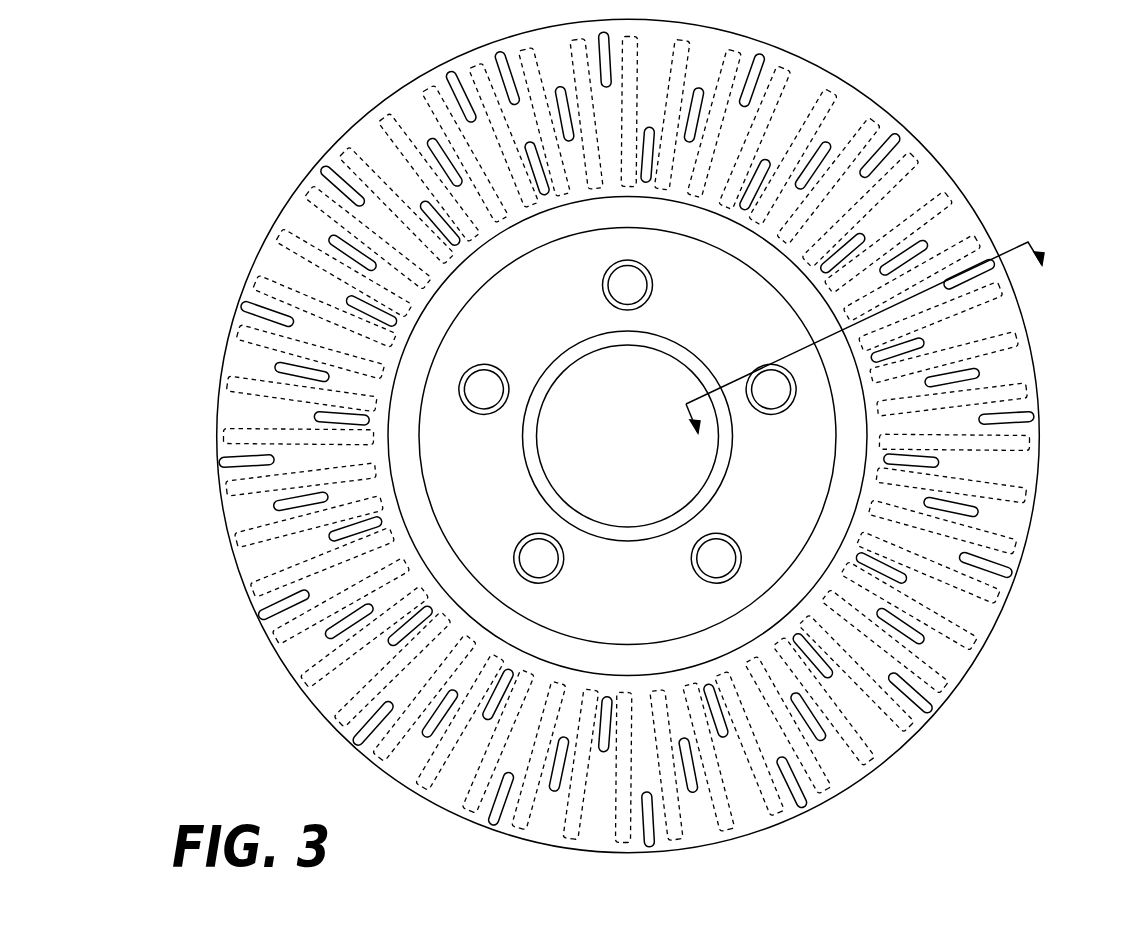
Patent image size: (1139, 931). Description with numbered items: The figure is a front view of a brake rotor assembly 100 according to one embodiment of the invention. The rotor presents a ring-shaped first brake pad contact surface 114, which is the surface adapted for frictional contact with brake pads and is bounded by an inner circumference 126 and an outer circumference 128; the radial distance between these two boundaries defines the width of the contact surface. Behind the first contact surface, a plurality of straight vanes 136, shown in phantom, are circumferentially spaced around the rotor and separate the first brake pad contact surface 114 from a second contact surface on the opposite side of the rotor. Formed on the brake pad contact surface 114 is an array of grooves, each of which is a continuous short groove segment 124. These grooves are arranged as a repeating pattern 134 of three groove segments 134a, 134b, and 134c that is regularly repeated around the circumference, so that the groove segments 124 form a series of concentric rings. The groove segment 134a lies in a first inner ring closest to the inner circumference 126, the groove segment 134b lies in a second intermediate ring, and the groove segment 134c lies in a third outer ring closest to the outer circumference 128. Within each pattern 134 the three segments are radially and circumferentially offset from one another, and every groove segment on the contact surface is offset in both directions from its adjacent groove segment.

The brake rotor assembly 100 is at (987, 140).
The first brake pad contact surface 114 is at (1002, 321).
The groove segment 124 is at (989, 262).
The inner circumference 126 is at (866, 442).
The outer circumference 128 is at (1031, 519).
The repeating pattern 134 is at (355, 25).
The groove segment 134a is at (423, 200).
The groove segment 134b is at (428, 138).
The groove segment 134c is at (452, 76).
The straight vanes 136 is at (1002, 308).